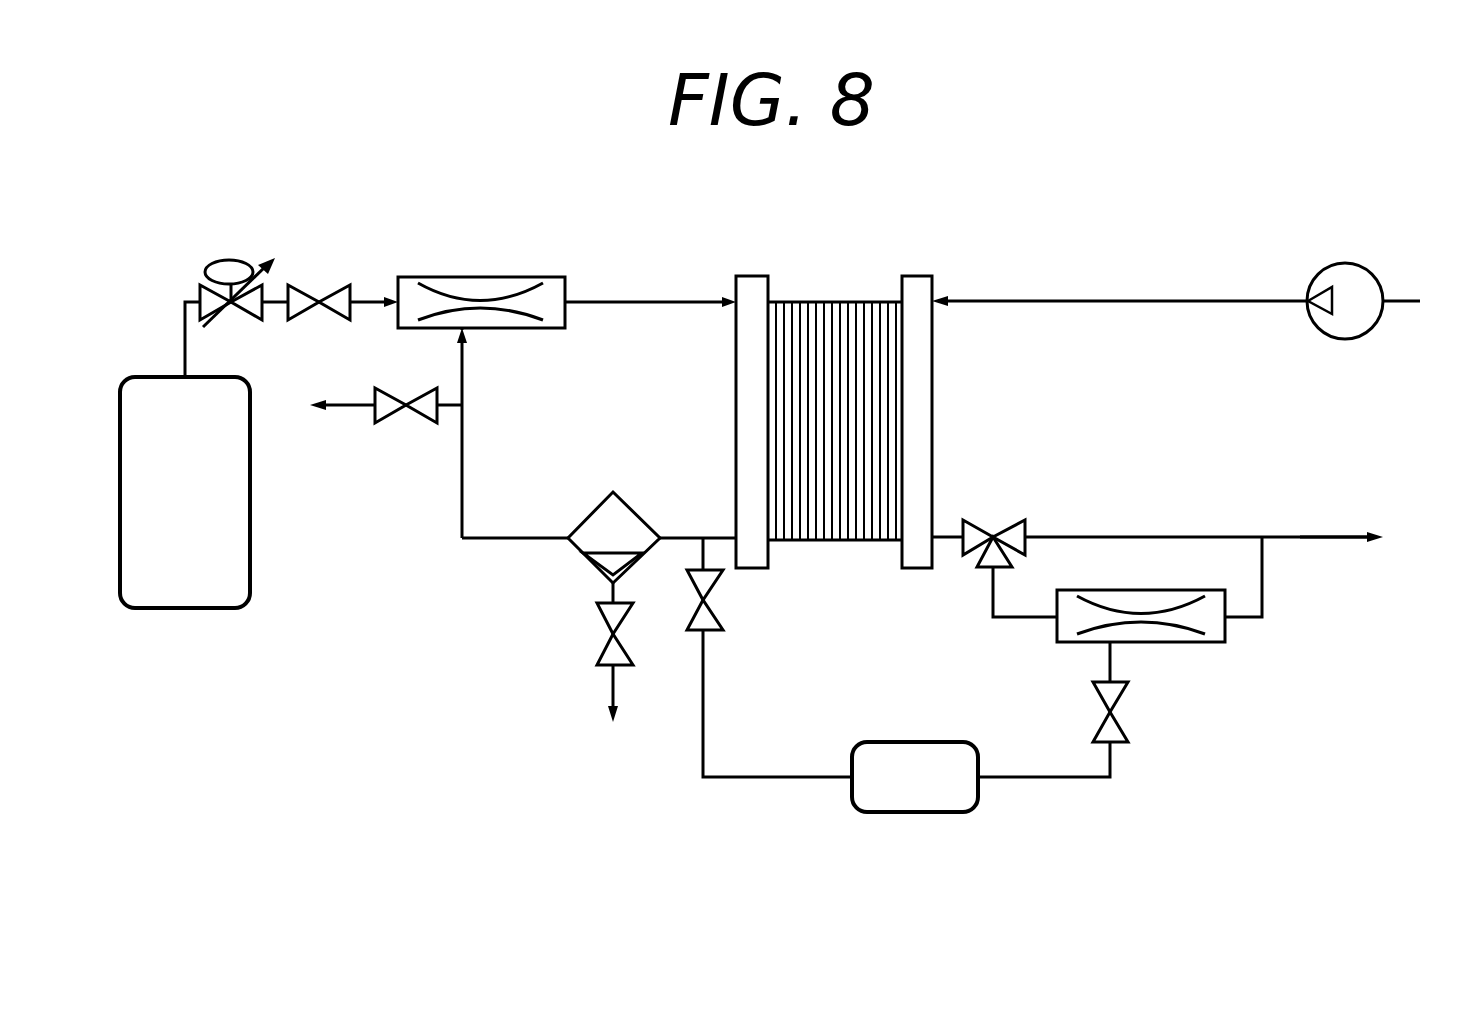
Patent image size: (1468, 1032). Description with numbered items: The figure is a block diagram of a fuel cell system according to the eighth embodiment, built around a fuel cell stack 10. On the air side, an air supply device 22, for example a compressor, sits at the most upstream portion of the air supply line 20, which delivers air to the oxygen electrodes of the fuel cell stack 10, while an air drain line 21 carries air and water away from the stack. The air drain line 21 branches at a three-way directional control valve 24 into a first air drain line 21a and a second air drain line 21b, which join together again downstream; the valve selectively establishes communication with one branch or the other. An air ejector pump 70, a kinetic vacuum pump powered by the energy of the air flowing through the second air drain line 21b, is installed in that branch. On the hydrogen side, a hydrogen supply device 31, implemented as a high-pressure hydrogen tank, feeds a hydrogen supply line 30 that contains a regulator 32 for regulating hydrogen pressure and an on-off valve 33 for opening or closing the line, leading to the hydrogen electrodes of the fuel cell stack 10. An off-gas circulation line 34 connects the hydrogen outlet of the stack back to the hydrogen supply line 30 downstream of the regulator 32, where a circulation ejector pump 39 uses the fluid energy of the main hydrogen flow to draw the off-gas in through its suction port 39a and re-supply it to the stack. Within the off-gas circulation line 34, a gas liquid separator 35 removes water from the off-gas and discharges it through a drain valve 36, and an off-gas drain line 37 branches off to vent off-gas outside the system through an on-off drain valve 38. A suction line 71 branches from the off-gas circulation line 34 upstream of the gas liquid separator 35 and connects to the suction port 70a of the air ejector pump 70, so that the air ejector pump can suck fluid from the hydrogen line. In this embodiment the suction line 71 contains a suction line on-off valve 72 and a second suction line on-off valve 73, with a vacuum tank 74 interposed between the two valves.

The fuel cell stack 10 is at (818, 527).
The air supply line 20 is at (973, 301).
The air drain line 21 is at (1308, 537).
The first air drain line 21a is at (1162, 537).
The second air drain line 21b is at (1012, 617).
The air supply device 22 is at (1348, 338).
The three-way directional control valve 24 is at (997, 523).
The hydrogen supply line 30 is at (183, 345).
The hydrogen supply device 31 is at (193, 608).
The regulator 32 is at (228, 259).
The on-off valve 33 is at (319, 295).
The off-gas circulation line 34 is at (462, 470).
The gas liquid separator 35 is at (627, 500).
The drain valve 36 is at (607, 633).
The off-gas drain line 37 is at (348, 405).
The on-off drain valve 38 is at (402, 410).
The circulation ejector pump 39 is at (498, 277).
The suction port 39a is at (465, 330).
The air ejector pump 70 is at (1183, 642).
The suction port 70a is at (1120, 643).
The suction line 71 is at (1050, 777).
The suction line on-off valve 72 is at (712, 600).
The second suction line on-off valve 73 is at (1100, 712).
The vacuum tank 74 is at (908, 812).